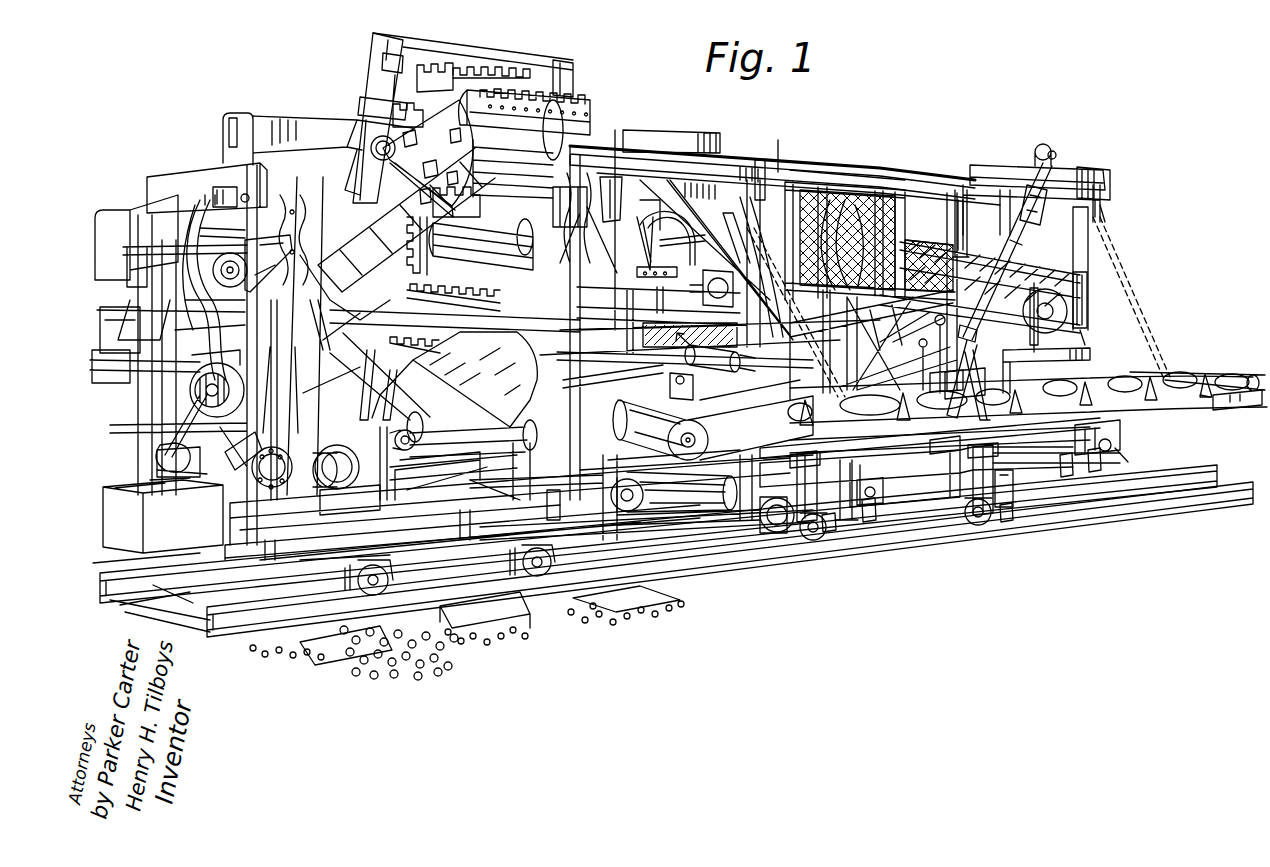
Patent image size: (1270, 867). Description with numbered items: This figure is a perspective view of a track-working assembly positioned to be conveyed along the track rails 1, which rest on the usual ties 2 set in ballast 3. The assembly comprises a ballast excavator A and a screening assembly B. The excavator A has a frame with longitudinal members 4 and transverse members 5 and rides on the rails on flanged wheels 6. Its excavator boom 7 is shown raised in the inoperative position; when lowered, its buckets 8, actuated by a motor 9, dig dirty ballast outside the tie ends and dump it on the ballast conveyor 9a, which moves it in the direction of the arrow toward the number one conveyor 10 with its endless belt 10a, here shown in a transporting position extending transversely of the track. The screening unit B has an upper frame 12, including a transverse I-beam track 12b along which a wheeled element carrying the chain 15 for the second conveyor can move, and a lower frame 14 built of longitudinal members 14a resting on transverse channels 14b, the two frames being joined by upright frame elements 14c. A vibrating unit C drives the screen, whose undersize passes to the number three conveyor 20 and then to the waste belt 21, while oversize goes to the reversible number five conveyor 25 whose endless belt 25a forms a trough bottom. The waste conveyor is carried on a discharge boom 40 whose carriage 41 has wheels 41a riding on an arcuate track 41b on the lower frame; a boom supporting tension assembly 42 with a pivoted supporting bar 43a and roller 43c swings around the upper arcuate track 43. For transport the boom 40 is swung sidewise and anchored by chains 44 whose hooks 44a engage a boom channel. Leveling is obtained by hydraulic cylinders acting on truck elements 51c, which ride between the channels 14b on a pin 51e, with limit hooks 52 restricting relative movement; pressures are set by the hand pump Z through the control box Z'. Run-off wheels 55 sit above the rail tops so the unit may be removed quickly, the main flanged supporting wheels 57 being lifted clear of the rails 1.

The ballast excavator A is at (249, 103).
The screening assembly B is at (851, 146).
The vibrating unit C is at (664, 222).
The track rails 1 is at (120, 572).
The ties 2 is at (303, 650).
The ballast 3 is at (410, 655).
The longitudinal members 4 is at (457, 537).
The transverse members 5 is at (320, 557).
The flanged wheels 6 is at (360, 590).
The excavator boom 7 is at (417, 243).
The buckets 8 is at (490, 75).
The motor 9 is at (108, 213).
The ballast conveyor 9a is at (434, 393).
The number 1 conveyor 10 is at (680, 387).
The endless belt 10a is at (712, 358).
The upper frame 12 is at (728, 165).
The I-beam 12b is at (612, 177).
The lower frame 14 is at (908, 470).
The longitudinally extending members 14a is at (843, 522).
The transverse members 14b is at (790, 542).
The upwardly extending frame elements 14c is at (759, 190).
The chain 15 is at (776, 144).
The number 3 conveyor 20 is at (966, 350).
The number 4 waste conveyor 21 is at (657, 413).
The number 5 conveyor 25 is at (684, 501).
The endless belt 25a is at (695, 512).
The discharge boom 40 is at (1203, 410).
The carriage 41 is at (1120, 440).
The wheels 41a is at (1094, 472).
The arcuate track 41b is at (1066, 475).
The boom supporting tension assembly 42 is at (1017, 248).
The upper arcuate track 43 is at (1110, 185).
The supporting bar 43a is at (1020, 160).
The roller 43c is at (1056, 153).
The chains 44 is at (1122, 262).
The hooks 44a is at (1170, 372).
The truck elements 51c is at (830, 500).
The pin 51e is at (868, 522).
The limit hooks 52 is at (807, 500).
The run-off wheels 55 is at (778, 533).
The main flanged supporting wheels 57 is at (825, 532).
The manually actuated pump Z is at (927, 440).
The control box Z' is at (989, 378).